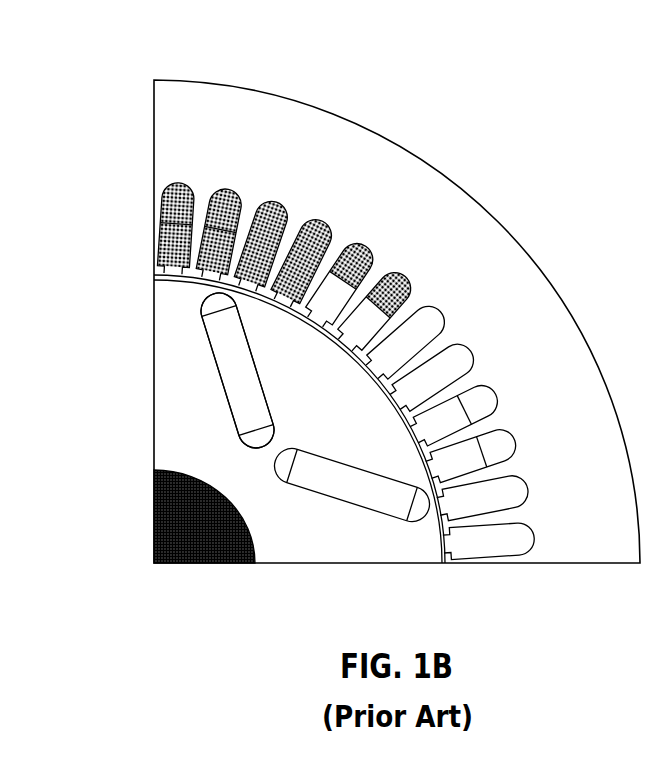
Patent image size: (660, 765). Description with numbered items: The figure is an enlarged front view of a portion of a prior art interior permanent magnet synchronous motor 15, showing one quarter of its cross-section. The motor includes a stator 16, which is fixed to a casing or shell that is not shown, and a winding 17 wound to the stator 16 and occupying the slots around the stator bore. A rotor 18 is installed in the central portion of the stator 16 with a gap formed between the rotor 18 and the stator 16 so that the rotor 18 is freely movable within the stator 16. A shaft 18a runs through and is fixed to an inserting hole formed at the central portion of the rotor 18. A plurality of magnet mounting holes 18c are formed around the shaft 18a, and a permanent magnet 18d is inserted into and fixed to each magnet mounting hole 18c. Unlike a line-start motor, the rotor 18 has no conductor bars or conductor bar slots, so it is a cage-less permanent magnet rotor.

The IPM synchronous motor 15 is at (189, 44).
The stator 16 is at (453, 167).
The winding 17 is at (453, 306).
The rotor 18 is at (349, 540).
The shaft 18a is at (208, 558).
The magnet mounting hole 18c is at (220, 332).
The permanent magnet 18d is at (240, 384).